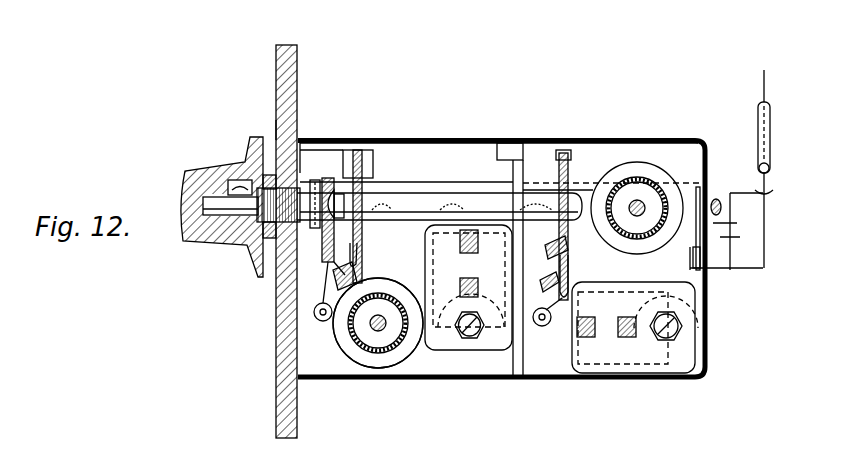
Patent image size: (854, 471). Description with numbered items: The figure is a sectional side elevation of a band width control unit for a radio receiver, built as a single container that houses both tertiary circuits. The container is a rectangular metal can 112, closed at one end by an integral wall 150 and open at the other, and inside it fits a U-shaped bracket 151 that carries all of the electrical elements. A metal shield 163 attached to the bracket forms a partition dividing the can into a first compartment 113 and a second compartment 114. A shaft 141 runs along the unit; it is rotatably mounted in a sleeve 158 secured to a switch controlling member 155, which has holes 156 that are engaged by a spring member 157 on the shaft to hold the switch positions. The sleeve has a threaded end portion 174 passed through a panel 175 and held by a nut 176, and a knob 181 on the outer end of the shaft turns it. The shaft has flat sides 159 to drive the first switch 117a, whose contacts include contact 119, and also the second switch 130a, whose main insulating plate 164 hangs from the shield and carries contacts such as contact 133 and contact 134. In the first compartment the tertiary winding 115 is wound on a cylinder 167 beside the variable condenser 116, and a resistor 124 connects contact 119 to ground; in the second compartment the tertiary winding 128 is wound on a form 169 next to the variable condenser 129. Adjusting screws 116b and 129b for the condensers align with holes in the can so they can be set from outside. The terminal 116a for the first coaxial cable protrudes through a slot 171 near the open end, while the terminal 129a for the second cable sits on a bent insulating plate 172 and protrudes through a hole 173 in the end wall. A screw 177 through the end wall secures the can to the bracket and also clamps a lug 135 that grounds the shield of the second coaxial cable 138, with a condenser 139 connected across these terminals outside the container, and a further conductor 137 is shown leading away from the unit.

The panel 175 is at (296, 50).
The knob 181 is at (207, 172).
The threaded end portion 174 is at (278, 136).
The nut 176 is at (253, 243).
The compartment 113 is at (402, 160).
The metal can 112 is at (495, 140).
The slot 171 is at (308, 186).
The sleeve 158 is at (343, 158).
The terminal 116a is at (380, 150).
The U-shaped bracket 151 is at (383, 187).
The shaft 141 is at (440, 198).
The flat sides 159 is at (458, 200).
The metal shield 163 is at (530, 187).
The conductor 137 is at (513, 375).
The main insulating plate 164 is at (566, 152).
The compartment 114 is at (603, 160).
The tertiary winding 128 is at (648, 176).
The form 169 is at (623, 184).
The integral wall 150 is at (708, 153).
The coaxial cable 138 is at (757, 110).
The screw 177 is at (718, 202).
The lug 135 is at (735, 220).
The condenser 139 is at (745, 263).
The terminal 129a is at (735, 272).
The insulating plate 172 is at (693, 248).
The hole 173 is at (694, 268).
The second switch 130a is at (574, 260).
The contact 133 is at (543, 306).
The contact 134 is at (541, 326).
The spring member 157 is at (358, 242).
The switch 117a is at (369, 259).
The contact 119 is at (316, 308).
The switch controlling member 155 is at (305, 262).
The holes 156 is at (330, 268).
The tertiary winding 115 is at (378, 368).
The cylinder 167 is at (353, 337).
The resistor 124 is at (340, 362).
The variable condenser 116 is at (456, 350).
The adjusting screw 116b is at (480, 340).
The variable condenser 129 is at (627, 368).
The adjusting screw 129b is at (690, 364).